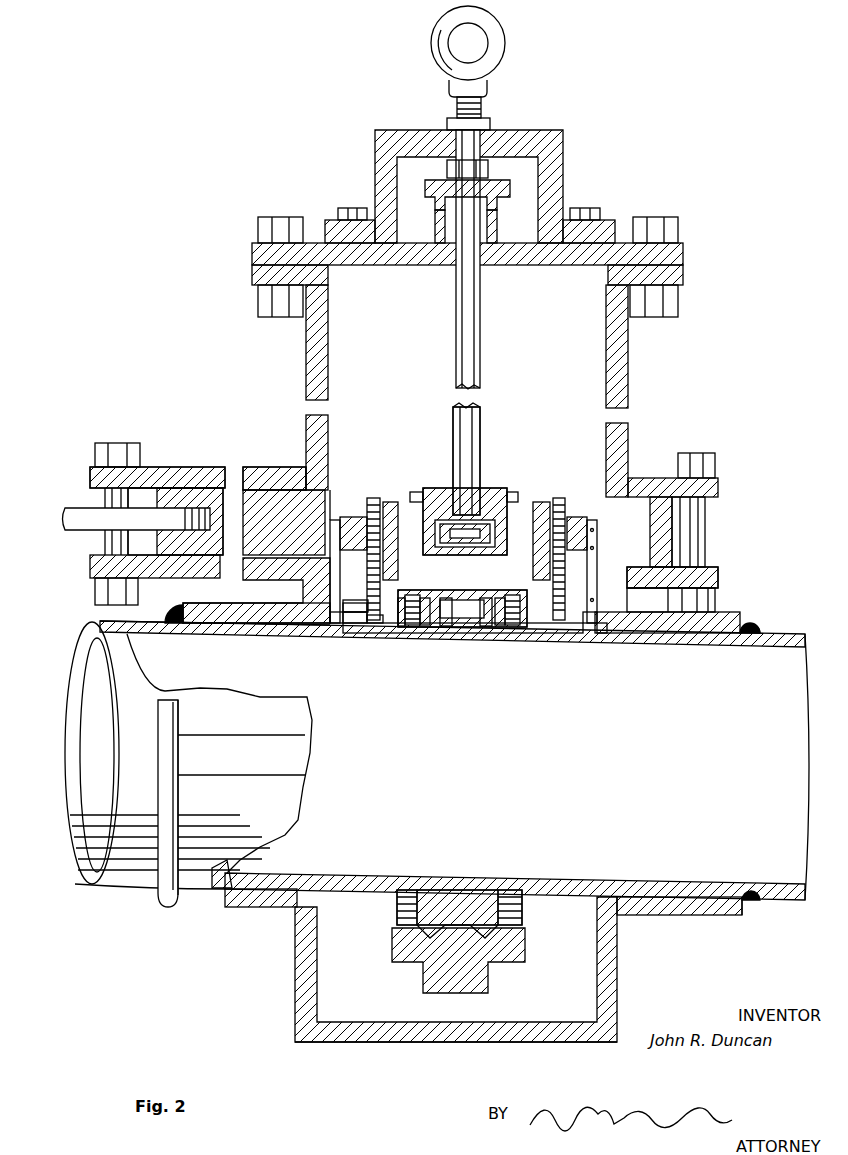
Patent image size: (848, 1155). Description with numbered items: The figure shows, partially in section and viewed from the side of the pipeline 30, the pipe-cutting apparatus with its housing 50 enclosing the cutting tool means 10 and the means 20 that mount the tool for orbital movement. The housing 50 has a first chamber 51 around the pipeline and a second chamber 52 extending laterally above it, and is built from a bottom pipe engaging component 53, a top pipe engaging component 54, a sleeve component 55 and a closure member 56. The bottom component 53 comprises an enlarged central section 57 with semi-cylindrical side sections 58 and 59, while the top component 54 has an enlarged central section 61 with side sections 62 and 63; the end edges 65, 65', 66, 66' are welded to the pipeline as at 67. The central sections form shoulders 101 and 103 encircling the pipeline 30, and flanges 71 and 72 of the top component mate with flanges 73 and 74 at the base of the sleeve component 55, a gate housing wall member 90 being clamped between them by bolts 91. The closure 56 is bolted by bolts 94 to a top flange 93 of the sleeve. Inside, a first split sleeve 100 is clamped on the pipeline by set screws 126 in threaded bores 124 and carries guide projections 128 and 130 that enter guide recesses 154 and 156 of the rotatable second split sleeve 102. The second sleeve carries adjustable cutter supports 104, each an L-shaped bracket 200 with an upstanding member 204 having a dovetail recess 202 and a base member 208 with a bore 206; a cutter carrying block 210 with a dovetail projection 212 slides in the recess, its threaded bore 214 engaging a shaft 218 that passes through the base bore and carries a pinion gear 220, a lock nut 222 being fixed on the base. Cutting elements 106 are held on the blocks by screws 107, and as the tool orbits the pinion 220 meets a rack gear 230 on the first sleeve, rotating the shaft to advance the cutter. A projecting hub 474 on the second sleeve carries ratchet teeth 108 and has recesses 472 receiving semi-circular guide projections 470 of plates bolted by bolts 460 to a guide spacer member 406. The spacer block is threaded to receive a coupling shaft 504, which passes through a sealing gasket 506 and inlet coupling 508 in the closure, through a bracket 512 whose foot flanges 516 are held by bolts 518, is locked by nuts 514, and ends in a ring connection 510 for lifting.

The cutting tool means 10 is at (556, 470).
The means for supporting the cutting tool 20 is at (392, 448).
The pipeline 30 is at (112, 893).
The housing 50 is at (645, 470).
The first chamber 51 is at (602, 965).
The second chamber 52 is at (612, 360).
The bottom pipe engaging component 53 is at (212, 895).
The top pipe engaging component 54 is at (215, 610).
The sleeve component 55 is at (306, 350).
The closure member 56 is at (684, 256).
The enlarged central section 57 is at (478, 1042).
The semi-cylindrical side section 58 is at (212, 908).
The semi-cylindrical side section 59 is at (725, 915).
The enlarged central section 61 is at (600, 580).
The semi-cylindrical side section 62 is at (722, 620).
The semi-cylindrical side section 63 is at (293, 612).
The end edge 65 is at (152, 803).
The end edge 65' is at (158, 782).
The end edge 66 is at (763, 908).
The end edge 66' is at (775, 621).
The weld 67 is at (174, 624).
The flange 71 is at (718, 575).
The flange 72 is at (92, 578).
The flange 73 is at (140, 467).
The flange 74 is at (678, 470).
The gate housing wall member 90 is at (700, 520).
The bolts 91 is at (116, 450).
The top flange 93 is at (684, 276).
The bolts 94 is at (260, 222).
The first split sleeve 100 is at (482, 617).
The shoulder 101 is at (290, 634).
The second split sleeve 102 is at (567, 520).
The shoulder 103 is at (610, 633).
The adjustable cutter support 104 is at (392, 495).
The cutting element 106 is at (343, 628).
The screws 107 is at (328, 520).
The ratchet 108 is at (488, 985).
The threaded bore 124 is at (426, 628).
The set screw 126 is at (425, 627).
The guide projection 128 is at (427, 895).
The guide projection 130 is at (472, 925).
The guide recess 154 is at (470, 630).
The guide recess 156 is at (508, 630).
The L-shaped bracket 200 is at (392, 623).
The dovetail recess 202 is at (360, 517).
The upstanding member 204 is at (333, 600).
The bore 206 is at (378, 633).
The base member 208 is at (372, 633).
The cutter carrying block 210 is at (283, 470).
The dovetail projection 212 is at (416, 492).
The threaded bore 214 is at (306, 462).
The shaft 218 is at (388, 502).
The pinion gear 220 is at (355, 633).
The lock nut 222 is at (340, 625).
The rack gear 230 is at (403, 630).
The guide spacer member 406 is at (490, 488).
The bolts 460 is at (516, 492).
The guide projection 470 is at (440, 545).
The recess 472 is at (490, 560).
The projecting hub 474 is at (444, 488).
The coupling shaft 504 is at (481, 322).
The sealing gasket 506 is at (495, 185).
The inlet coupling 508 is at (497, 226).
The ring connection 510 is at (497, 50).
The block brace or bracket 512 is at (538, 140).
The nuts 514 is at (447, 121).
The foot flanges 516 is at (328, 226).
The bolts 518 is at (343, 208).